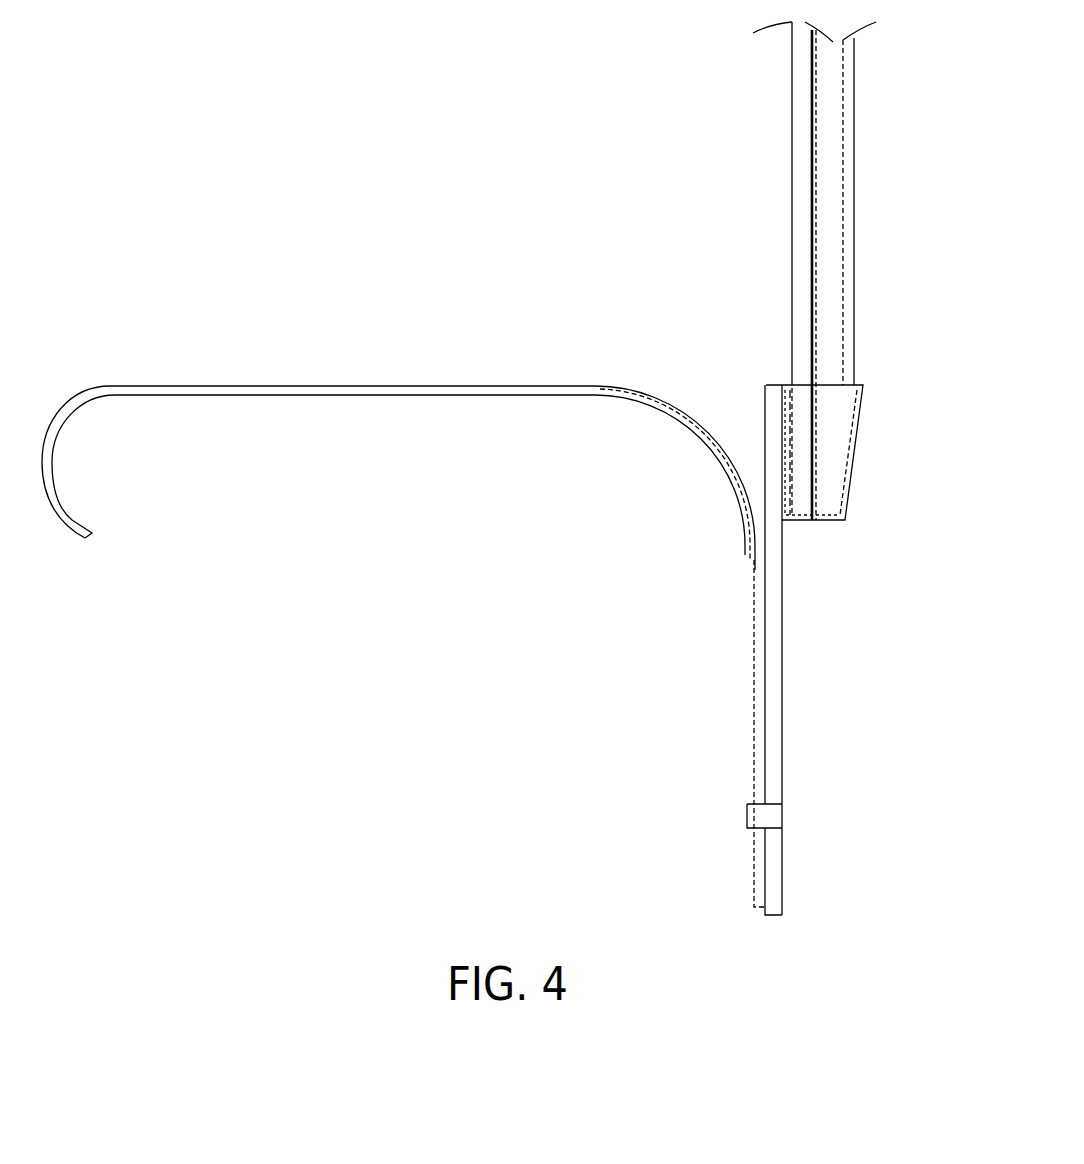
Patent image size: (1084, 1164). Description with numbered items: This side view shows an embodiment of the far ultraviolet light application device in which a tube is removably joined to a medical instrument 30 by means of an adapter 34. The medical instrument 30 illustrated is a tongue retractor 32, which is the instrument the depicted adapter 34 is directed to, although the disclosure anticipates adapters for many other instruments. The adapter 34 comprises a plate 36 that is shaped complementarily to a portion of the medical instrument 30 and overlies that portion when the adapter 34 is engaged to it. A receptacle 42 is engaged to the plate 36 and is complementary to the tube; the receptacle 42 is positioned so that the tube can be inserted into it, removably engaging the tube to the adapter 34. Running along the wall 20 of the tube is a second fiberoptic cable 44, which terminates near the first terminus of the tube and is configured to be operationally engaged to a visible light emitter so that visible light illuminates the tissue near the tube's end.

The wall 20 is at (838, 245).
The medical instrument 30 is at (328, 385).
The tongue retractor 32 is at (708, 445).
The adapter 34 is at (847, 505).
The plate 36 is at (784, 748).
The receptacle 42 is at (860, 434).
The second fiberoptic cable 44 is at (812, 143).